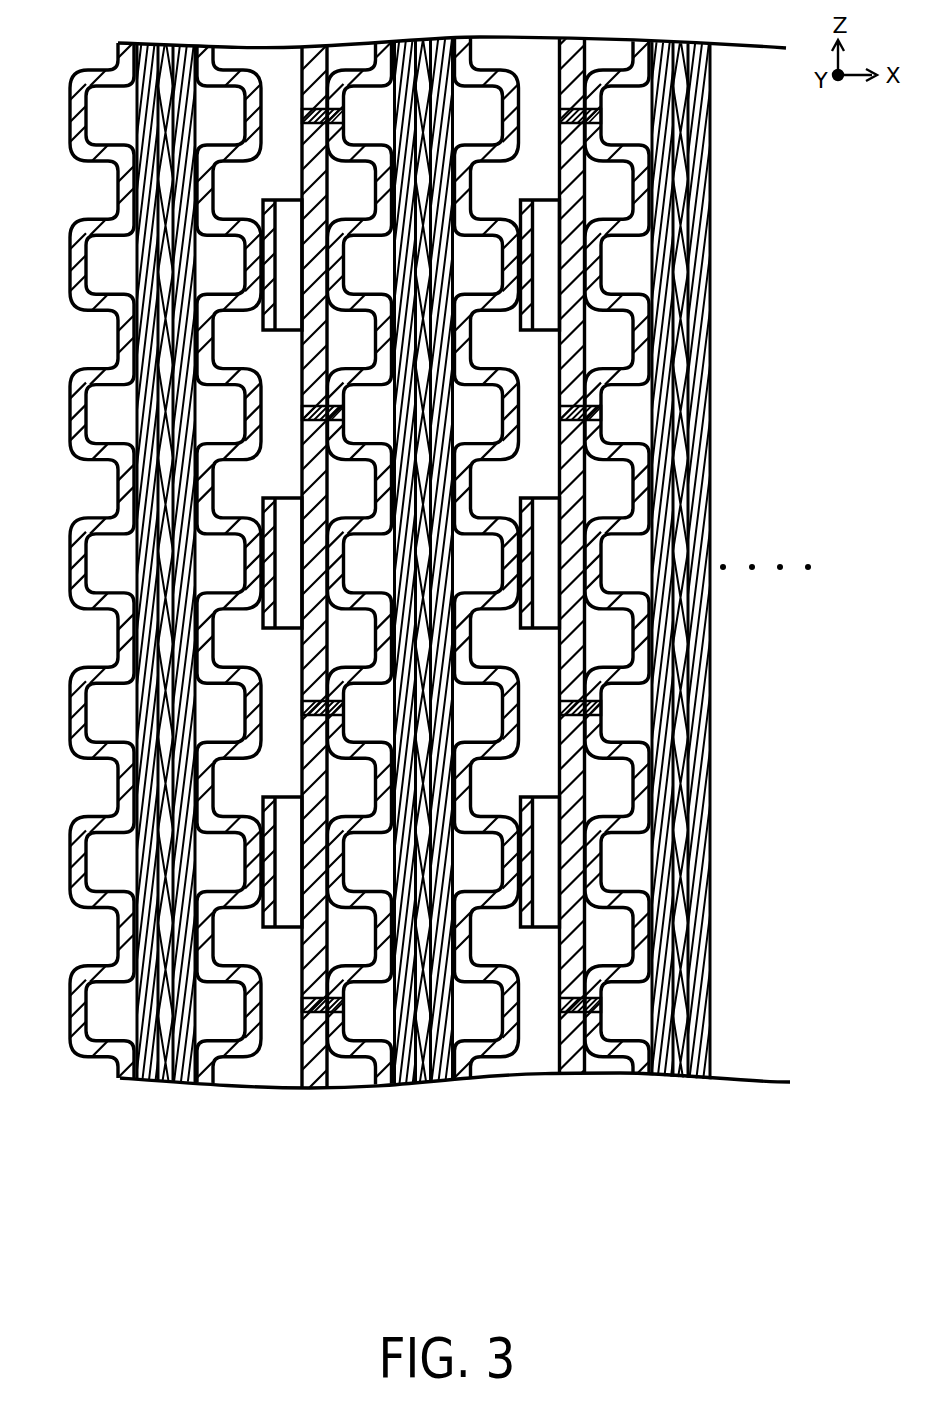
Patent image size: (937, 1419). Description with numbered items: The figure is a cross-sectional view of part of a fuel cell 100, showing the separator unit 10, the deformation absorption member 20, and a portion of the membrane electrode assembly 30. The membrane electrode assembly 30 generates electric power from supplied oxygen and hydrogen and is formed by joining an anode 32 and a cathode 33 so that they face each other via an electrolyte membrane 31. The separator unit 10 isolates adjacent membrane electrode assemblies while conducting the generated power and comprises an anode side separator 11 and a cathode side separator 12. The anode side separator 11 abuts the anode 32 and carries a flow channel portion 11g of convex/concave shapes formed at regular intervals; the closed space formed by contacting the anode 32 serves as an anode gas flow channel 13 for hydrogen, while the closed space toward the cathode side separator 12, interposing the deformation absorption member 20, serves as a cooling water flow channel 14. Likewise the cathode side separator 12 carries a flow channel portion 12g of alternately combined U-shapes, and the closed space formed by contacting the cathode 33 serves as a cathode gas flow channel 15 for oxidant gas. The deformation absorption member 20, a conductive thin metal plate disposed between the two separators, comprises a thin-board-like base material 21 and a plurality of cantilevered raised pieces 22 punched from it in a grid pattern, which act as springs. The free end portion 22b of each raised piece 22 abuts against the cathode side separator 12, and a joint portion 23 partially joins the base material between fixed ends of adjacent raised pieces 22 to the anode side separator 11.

The fuel cell 100 is at (403, 639).
The membrane electrode assembly 30 is at (158, 619).
The electrolyte membrane 31 is at (170, 1080).
The anode 32 is at (150, 1080).
The cathode 33 is at (190, 1080).
The separator unit 10 is at (276, 619).
The anode side separator 11 is at (338, 1030).
The flow channel portion 11g is at (282, 797).
The cathode side separator 12 is at (222, 1062).
The flow channel portion 12g is at (237, 1013).
The deformation absorption member 20 is at (456, 619).
The base material 21 is at (333, 882).
The raised pieces 22 is at (355, 958).
The free end portion 22b is at (262, 906).
The joint portion 23 is at (600, 407).
The anode gas flow channel 13 is at (365, 417).
The cooling water flow channel 14 is at (348, 337).
The cathode gas flow channel 15 is at (477, 265).